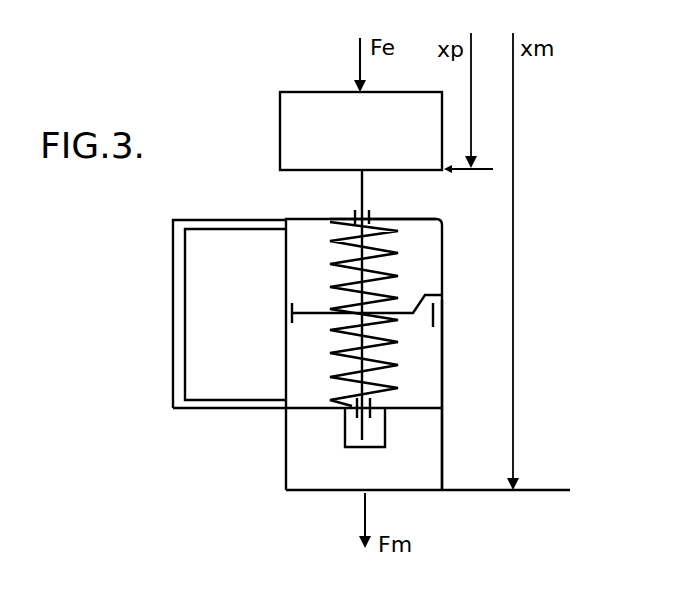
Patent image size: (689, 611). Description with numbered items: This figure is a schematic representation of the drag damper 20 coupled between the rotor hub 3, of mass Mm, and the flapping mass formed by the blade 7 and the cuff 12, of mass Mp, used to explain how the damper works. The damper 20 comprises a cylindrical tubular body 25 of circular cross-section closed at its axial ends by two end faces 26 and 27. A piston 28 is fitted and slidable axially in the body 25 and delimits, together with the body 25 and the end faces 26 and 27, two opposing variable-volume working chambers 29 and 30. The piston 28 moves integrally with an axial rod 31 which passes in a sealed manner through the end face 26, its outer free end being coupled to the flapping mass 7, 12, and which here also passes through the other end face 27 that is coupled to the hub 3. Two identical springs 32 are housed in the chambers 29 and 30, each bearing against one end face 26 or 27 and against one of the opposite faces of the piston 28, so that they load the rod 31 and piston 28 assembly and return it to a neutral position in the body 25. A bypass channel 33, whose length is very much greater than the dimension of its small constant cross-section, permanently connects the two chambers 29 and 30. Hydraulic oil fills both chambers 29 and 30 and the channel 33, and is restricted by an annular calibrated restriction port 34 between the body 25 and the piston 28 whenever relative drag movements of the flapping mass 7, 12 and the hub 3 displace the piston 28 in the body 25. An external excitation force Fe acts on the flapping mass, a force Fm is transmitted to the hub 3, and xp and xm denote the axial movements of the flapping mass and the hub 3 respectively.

The hub 3 is at (302, 460).
The blade 7 is at (321, 131).
The cuff 12 is at (313, 124).
The drag damper 20 is at (458, 231).
The cylindrical tubular body 25 is at (444, 348).
The end face 26 is at (416, 217).
The end face 27 is at (418, 410).
The piston 28 is at (428, 291).
The working chamber 29 is at (427, 262).
The working chamber 30 is at (427, 386).
The axial rod 31 is at (365, 187).
The springs 32 is at (335, 354).
The bypass channel 33 is at (173, 380).
The annular calibrated restriction port 34 is at (440, 332).